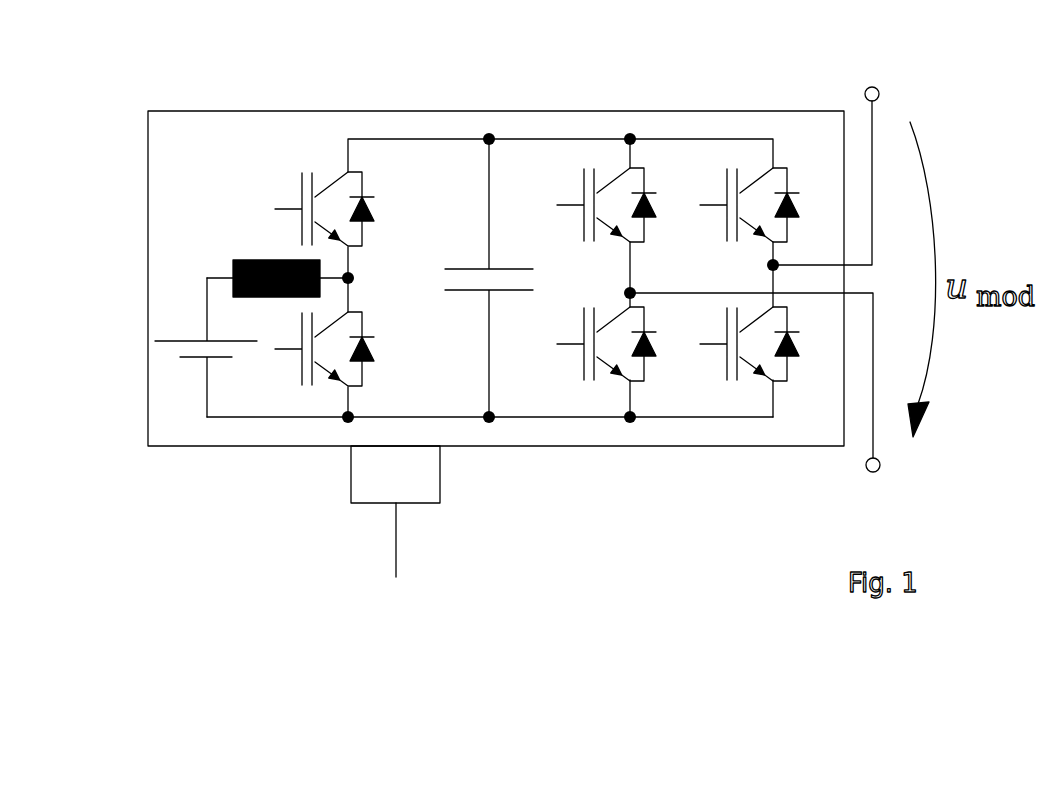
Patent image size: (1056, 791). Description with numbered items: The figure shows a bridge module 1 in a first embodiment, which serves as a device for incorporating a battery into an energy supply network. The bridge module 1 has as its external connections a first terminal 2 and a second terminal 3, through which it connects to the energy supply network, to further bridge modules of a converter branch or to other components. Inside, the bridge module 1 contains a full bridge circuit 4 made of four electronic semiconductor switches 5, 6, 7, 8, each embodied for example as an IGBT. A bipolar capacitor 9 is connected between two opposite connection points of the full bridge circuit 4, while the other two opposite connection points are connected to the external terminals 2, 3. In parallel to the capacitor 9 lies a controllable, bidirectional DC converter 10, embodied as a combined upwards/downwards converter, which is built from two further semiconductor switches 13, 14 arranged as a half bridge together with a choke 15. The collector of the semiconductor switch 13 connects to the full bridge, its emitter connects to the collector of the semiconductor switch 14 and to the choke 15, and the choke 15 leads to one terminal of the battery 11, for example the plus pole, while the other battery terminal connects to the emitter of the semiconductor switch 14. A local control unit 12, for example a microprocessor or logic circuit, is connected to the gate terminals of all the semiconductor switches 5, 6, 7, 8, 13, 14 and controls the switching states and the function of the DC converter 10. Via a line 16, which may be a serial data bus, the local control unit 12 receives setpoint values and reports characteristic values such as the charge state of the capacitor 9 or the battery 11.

The bridge module 1 is at (203, 109).
The first terminal 2 is at (880, 92).
The second terminal 3 is at (881, 463).
The full bridge circuit 4 is at (711, 128).
The electronic semiconductor switch 5 is at (726, 180).
The electronic semiconductor switch 6 is at (726, 372).
The electronic semiconductor switch 7 is at (583, 372).
The electronic semiconductor switch 8 is at (583, 180).
The bipolar capacitor 9 is at (452, 268).
The DC converter 10 is at (306, 147).
The battery 11 is at (167, 340).
The local control unit 12 is at (440, 488).
The electronic semiconductor switch 13 is at (298, 188).
The electronic semiconductor switch 14 is at (300, 378).
The choke 15 is at (250, 260).
The line 16 is at (396, 552).